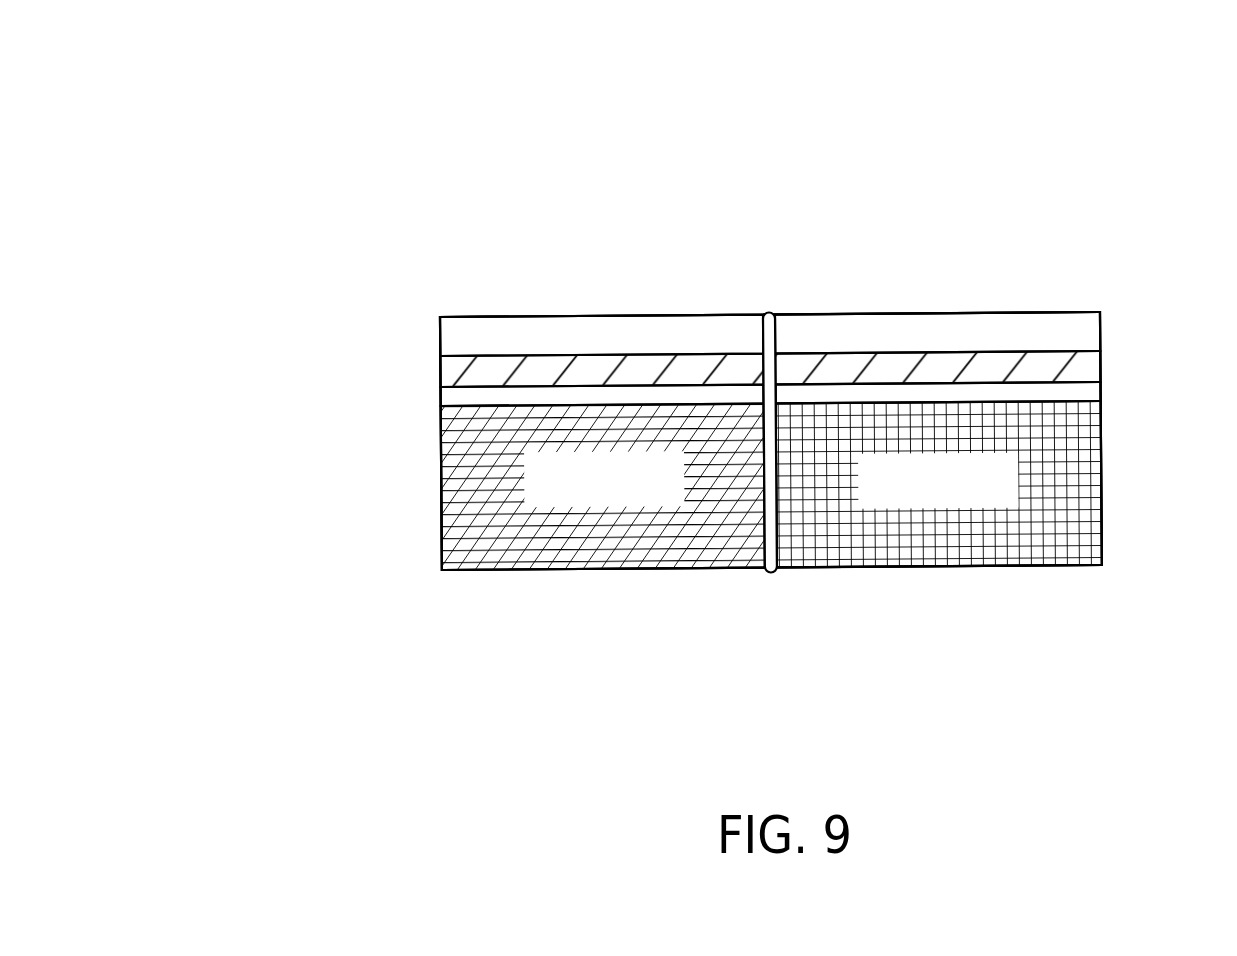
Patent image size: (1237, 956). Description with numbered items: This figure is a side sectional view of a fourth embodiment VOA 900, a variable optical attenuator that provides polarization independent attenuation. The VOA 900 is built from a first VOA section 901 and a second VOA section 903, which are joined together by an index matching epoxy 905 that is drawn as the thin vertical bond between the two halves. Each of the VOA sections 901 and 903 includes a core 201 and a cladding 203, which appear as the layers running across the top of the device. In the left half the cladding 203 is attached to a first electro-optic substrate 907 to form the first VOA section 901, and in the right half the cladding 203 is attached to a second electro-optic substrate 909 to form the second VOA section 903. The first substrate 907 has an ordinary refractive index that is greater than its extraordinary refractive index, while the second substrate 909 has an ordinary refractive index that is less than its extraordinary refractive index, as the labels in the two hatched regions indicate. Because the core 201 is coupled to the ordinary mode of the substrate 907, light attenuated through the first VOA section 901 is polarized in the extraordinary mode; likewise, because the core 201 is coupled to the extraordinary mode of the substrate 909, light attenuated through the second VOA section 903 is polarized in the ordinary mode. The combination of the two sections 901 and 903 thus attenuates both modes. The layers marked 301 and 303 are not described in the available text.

The VOA 900 is at (382, 85).
The first VOA section 901 is at (596, 187).
The second VOA section 903 is at (980, 190).
The index matching epoxy 905 is at (765, 310).
The first electro-optic substrate 907 is at (512, 455).
The second electro-optic substrate 909 is at (1070, 463).
The core 201 is at (465, 373).
The cladding 203 is at (437, 345).
The first alignment layer 301 is at (408, 396).
The second alignment layer 303 is at (1122, 391).